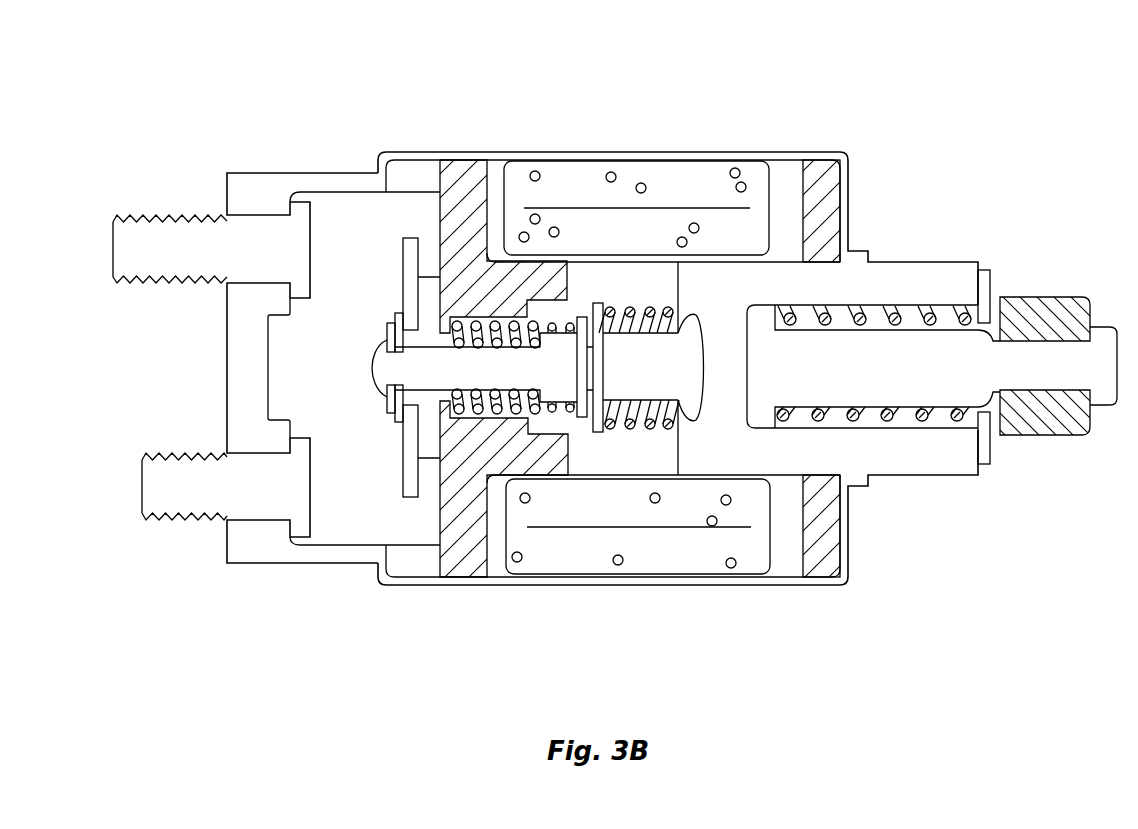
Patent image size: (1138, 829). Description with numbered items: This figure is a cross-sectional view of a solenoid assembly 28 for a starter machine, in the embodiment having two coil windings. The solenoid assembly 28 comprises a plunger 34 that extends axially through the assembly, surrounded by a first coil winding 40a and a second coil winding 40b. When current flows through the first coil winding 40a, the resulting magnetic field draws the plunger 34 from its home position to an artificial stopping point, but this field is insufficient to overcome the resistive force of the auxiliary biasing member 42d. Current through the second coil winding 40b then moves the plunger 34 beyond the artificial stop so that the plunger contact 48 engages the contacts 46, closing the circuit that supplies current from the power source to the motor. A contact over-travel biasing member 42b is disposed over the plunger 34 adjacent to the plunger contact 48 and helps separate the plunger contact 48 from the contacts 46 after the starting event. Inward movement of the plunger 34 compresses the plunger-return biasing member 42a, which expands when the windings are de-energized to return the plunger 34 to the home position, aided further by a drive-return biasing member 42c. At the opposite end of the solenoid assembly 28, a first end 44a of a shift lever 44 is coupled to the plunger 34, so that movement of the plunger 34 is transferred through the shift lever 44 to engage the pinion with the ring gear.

The solenoid assembly 28 is at (876, 133).
The contacts 46 is at (313, 223).
The first coil winding 40a is at (566, 188).
The second coil winding 40b is at (672, 225).
The plunger contact 48 is at (402, 262).
The plunger-return biasing member 42a is at (540, 410).
The contact over-travel biasing member 42b is at (484, 398).
The drive-return biasing member 42c is at (847, 417).
The auxiliary biasing member 42d is at (650, 310).
The plunger 34 is at (937, 448).
The shift lever 44 is at (999, 368).
The first end of shift lever 44a is at (1047, 428).